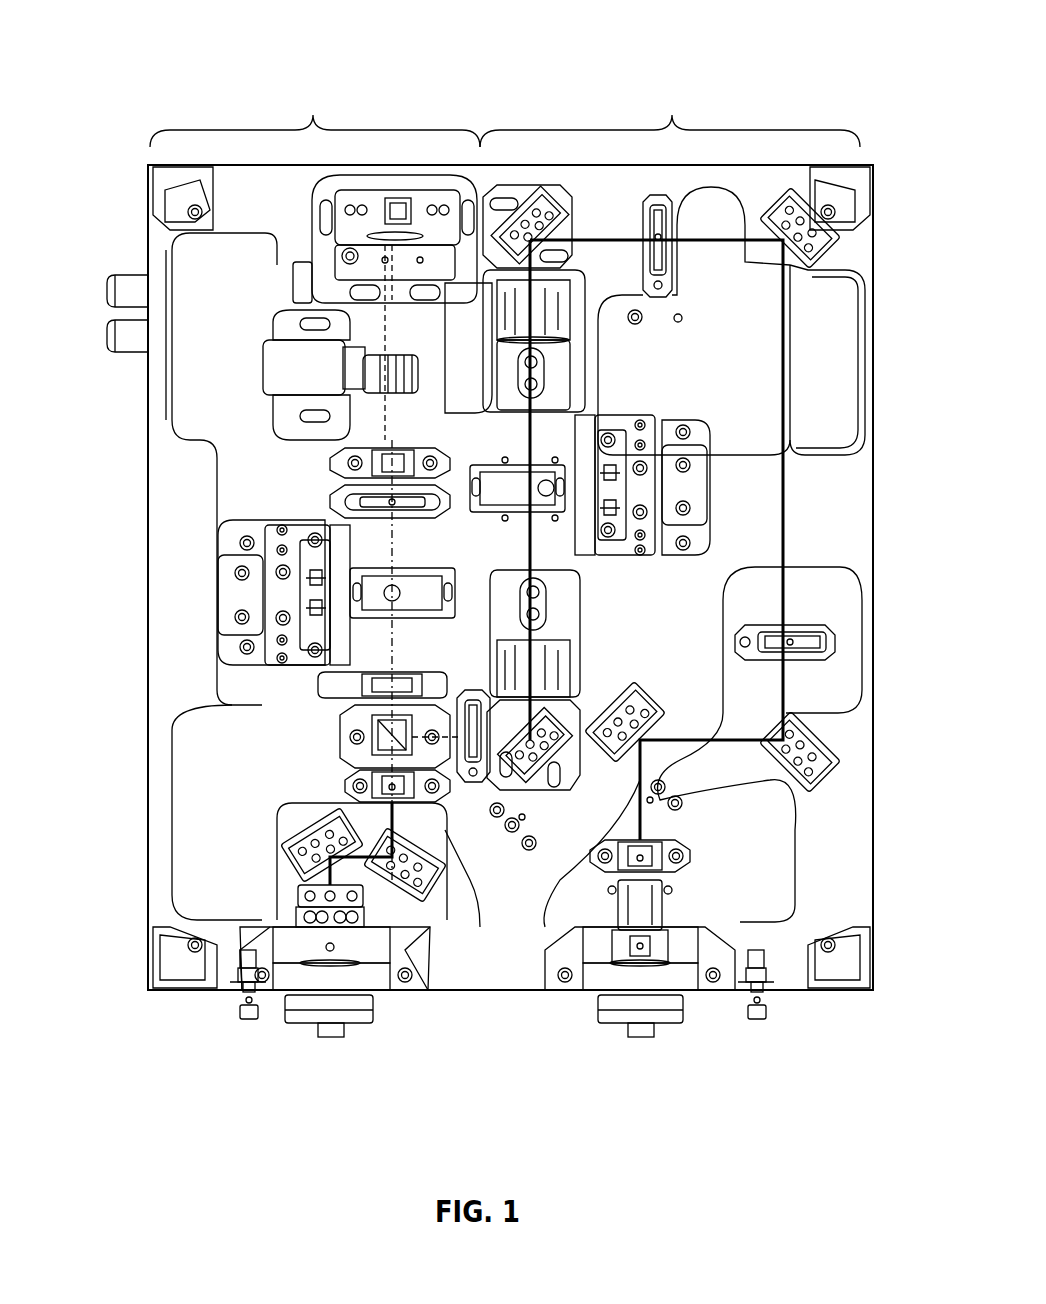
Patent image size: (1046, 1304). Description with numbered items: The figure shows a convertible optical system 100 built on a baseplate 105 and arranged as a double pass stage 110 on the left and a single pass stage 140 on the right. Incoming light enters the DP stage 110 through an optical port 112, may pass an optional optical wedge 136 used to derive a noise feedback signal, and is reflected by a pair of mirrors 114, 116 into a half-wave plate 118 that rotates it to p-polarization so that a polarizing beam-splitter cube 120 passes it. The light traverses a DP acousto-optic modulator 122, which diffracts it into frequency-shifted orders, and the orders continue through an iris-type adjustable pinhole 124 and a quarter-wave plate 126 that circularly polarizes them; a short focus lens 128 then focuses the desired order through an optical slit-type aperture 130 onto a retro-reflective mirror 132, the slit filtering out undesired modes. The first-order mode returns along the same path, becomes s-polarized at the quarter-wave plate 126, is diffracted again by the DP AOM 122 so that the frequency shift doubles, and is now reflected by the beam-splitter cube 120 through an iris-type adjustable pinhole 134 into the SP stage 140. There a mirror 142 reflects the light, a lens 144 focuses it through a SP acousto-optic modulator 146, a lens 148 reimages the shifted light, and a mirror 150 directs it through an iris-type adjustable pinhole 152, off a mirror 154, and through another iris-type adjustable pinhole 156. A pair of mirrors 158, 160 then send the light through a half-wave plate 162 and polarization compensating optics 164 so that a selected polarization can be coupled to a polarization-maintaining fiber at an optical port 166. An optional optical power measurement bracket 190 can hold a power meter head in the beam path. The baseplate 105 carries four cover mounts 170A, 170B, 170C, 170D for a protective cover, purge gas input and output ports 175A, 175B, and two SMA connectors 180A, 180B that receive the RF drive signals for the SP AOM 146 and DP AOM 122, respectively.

The convertible optical system 100 is at (486, 41).
The baseplate 105 is at (148, 458).
The DP stage 110 is at (313, 115).
The optical port 112 is at (328, 1052).
The mirror 114 is at (282, 837).
The mirror 116 is at (415, 912).
The half-wave plate 118 is at (338, 787).
The polarizing beam-splitter cube 120 is at (338, 737).
The DP acousto-optic modulator 122 is at (210, 595).
The iris-type adjustable pinhole 124 is at (322, 501).
The quarter-wave plate 126 is at (322, 462).
The short focus lens 128 is at (254, 367).
The optical slit-type aperture 130 is at (322, 263).
The retro-reflective mirror 132 is at (322, 220).
The iris-type adjustable pinhole 134 is at (472, 792).
The optical wedge 136 is at (282, 905).
The SP stage 140 is at (672, 115).
The mirror 142 is at (540, 792).
The lens 144 is at (586, 642).
The SP acousto-optic modulator 146 is at (716, 488).
The lens 148 is at (584, 347).
The mirror 150 is at (570, 256).
The iris-type adjustable pinhole 152 is at (688, 258).
The mirror 154 is at (838, 252).
The iris-type adjustable pinhole 156 is at (846, 642).
The mirror 158 is at (840, 757).
The mirror 160 is at (682, 717).
The half-wave plate 162 is at (706, 852).
The polarization compensating optics 164 is at (683, 912).
The optical port 166 is at (638, 1052).
The cover mount 170A is at (184, 150).
The cover mount 170B is at (185, 1002).
The cover mount 170C is at (846, 150).
The cover mount 170D is at (838, 1002).
The input port 175A is at (135, 275).
The output port 175B is at (135, 352).
The sub-miniature coaxial cable connector 180A is at (247, 1032).
The sub-miniature coaxial cable connector 180B is at (757, 1032).
The optical power measurement bracket 190 is at (342, 683).